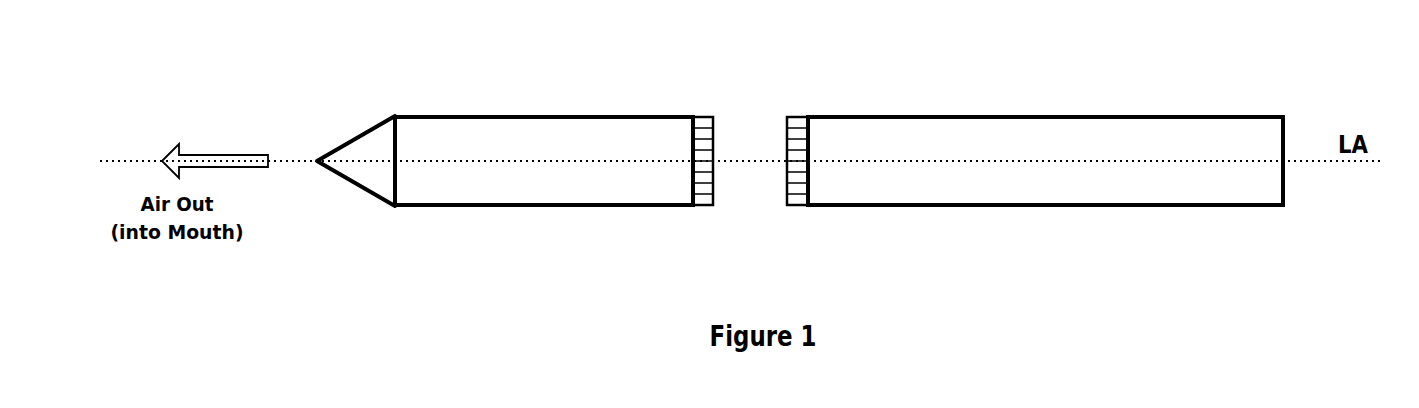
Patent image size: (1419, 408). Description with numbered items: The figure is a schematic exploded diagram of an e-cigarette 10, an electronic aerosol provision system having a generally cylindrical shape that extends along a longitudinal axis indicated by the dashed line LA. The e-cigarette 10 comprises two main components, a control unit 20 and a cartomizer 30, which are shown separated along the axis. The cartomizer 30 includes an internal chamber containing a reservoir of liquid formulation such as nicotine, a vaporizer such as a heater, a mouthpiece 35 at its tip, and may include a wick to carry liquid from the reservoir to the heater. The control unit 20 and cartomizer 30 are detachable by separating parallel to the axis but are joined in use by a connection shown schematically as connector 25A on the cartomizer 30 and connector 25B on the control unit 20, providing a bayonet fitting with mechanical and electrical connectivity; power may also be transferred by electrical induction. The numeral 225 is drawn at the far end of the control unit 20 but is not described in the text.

The e-cigarette 10 is at (388, 278).
The control unit 20 is at (915, 228).
The connector 25A is at (705, 207).
The connector 25B is at (800, 116).
The cartomizer 30 is at (542, 116).
The mouthpiece 35 is at (369, 162).
The air inlet end of body 225 is at (1293, 181).